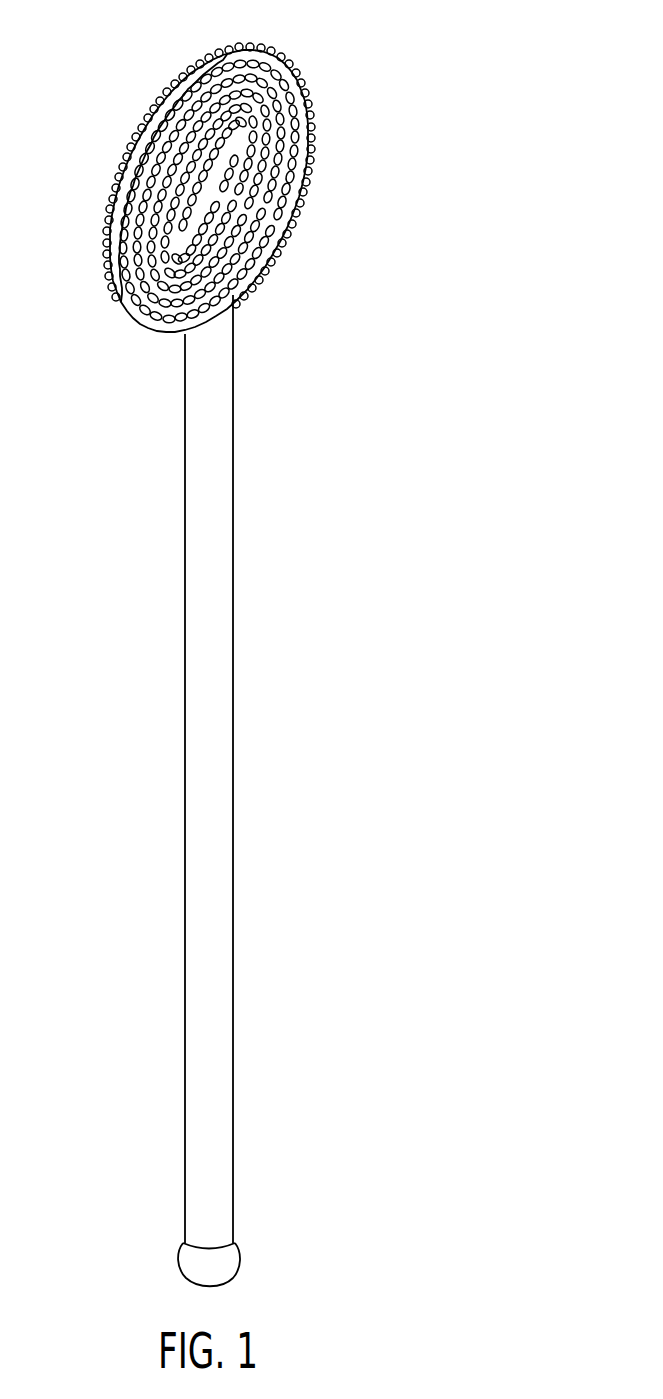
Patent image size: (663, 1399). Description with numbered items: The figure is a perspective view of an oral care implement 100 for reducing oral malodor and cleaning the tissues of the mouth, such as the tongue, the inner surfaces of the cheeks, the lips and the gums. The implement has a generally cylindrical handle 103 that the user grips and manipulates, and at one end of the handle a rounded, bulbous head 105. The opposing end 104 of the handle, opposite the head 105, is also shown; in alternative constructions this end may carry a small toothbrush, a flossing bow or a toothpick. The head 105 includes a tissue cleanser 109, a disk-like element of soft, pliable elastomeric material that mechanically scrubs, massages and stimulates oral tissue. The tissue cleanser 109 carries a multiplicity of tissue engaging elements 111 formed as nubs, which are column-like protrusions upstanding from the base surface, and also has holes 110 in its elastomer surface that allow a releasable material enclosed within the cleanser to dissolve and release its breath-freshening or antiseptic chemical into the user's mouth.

The oral care implement 100 is at (420, 335).
The handle 103 is at (234, 731).
The opposing end 104 is at (238, 1258).
The head 105 is at (318, 112).
The tissue cleanser 109 is at (268, 250).
The holes 110 is at (180, 238).
The tissue engaging elements 111 is at (228, 75).